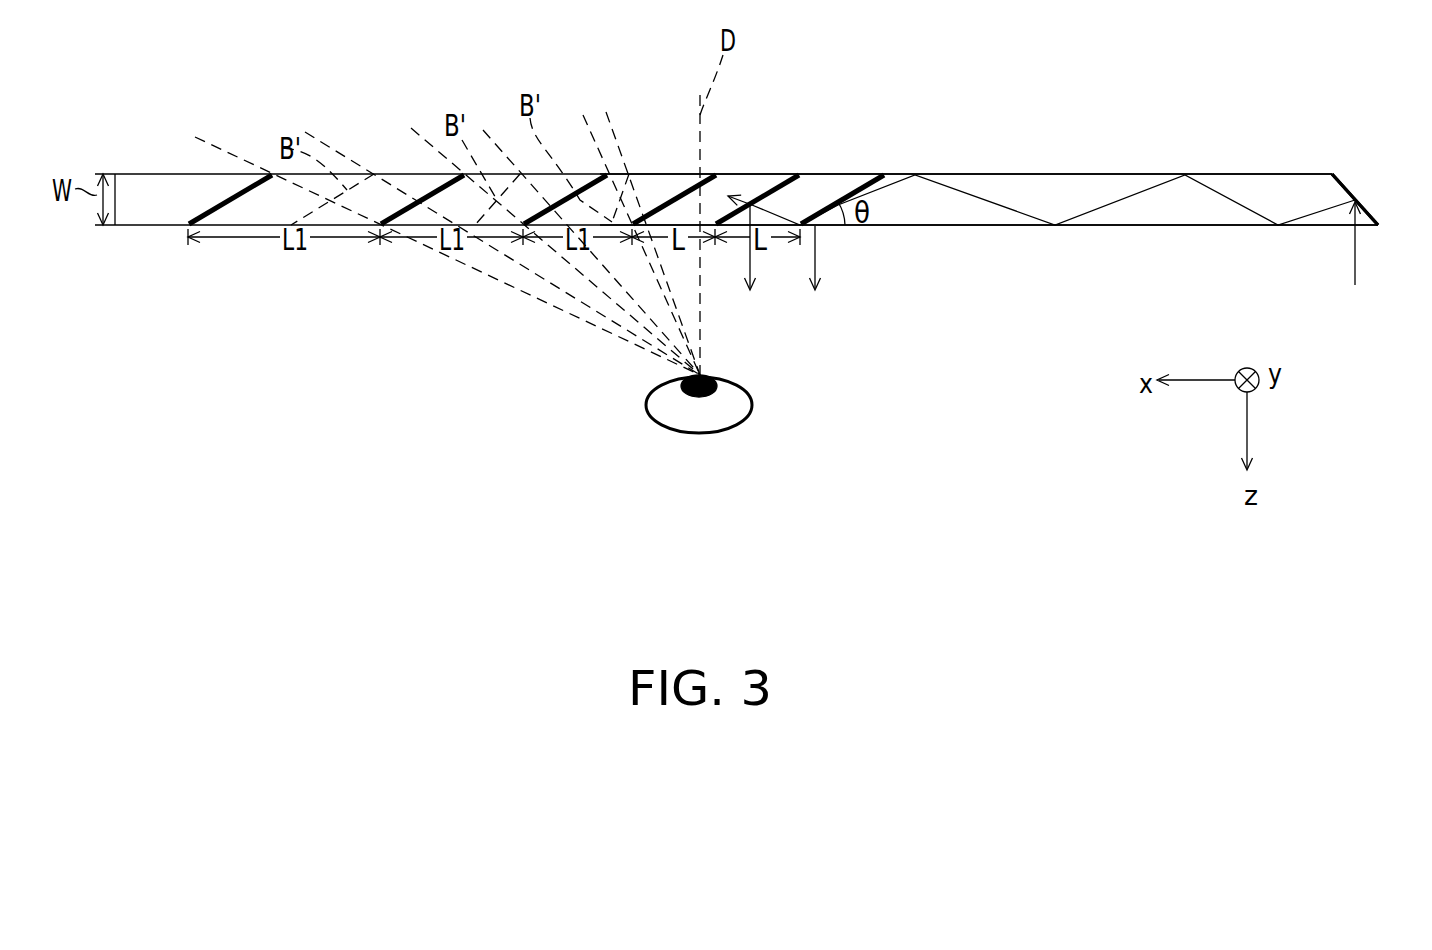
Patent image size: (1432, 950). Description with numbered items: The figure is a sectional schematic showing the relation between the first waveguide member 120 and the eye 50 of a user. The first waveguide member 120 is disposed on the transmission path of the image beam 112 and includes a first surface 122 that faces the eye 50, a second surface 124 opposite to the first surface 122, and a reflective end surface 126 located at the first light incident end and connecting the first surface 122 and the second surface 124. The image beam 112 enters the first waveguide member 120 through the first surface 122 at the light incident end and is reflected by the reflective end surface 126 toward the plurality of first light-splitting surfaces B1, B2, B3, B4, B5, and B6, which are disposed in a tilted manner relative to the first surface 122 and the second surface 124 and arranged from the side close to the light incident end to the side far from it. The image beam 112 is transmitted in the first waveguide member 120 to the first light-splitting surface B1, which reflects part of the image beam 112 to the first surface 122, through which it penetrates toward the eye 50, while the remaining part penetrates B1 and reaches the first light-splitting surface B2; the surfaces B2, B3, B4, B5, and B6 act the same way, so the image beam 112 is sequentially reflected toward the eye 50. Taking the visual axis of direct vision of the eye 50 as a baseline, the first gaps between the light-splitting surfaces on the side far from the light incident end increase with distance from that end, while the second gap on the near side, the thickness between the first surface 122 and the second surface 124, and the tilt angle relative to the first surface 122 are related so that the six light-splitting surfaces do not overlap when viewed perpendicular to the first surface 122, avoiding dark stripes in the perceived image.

The eye 50 is at (752, 405).
The image beam 112 is at (1355, 268).
The first waveguide member 120 is at (134, 187).
The first surface 122 is at (1196, 228).
The second surface 124 is at (1230, 172).
The reflective end surface 126 is at (1344, 184).
The first light-splitting surface B1 is at (865, 186).
The first light-splitting surface B2 is at (762, 196).
The first light-splitting surface B3 is at (670, 200).
The first light-splitting surface B4 is at (580, 190).
The first light-splitting surface B5 is at (428, 195).
The first light-splitting surface B6 is at (215, 207).